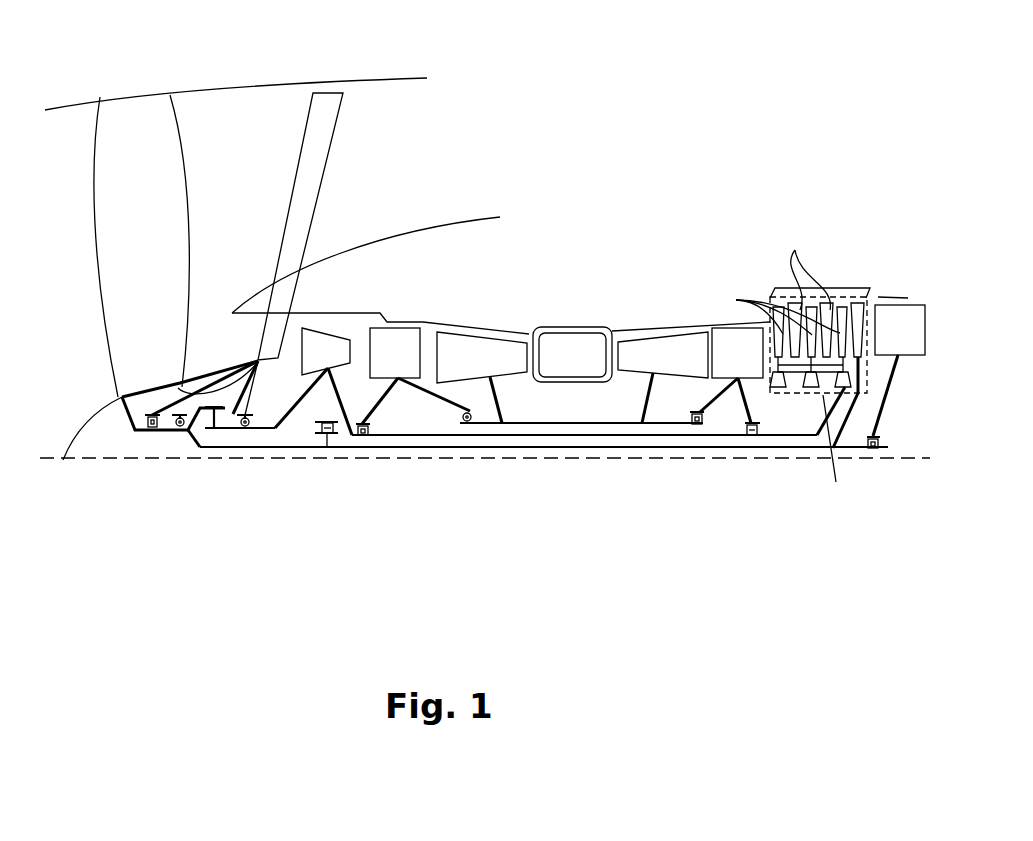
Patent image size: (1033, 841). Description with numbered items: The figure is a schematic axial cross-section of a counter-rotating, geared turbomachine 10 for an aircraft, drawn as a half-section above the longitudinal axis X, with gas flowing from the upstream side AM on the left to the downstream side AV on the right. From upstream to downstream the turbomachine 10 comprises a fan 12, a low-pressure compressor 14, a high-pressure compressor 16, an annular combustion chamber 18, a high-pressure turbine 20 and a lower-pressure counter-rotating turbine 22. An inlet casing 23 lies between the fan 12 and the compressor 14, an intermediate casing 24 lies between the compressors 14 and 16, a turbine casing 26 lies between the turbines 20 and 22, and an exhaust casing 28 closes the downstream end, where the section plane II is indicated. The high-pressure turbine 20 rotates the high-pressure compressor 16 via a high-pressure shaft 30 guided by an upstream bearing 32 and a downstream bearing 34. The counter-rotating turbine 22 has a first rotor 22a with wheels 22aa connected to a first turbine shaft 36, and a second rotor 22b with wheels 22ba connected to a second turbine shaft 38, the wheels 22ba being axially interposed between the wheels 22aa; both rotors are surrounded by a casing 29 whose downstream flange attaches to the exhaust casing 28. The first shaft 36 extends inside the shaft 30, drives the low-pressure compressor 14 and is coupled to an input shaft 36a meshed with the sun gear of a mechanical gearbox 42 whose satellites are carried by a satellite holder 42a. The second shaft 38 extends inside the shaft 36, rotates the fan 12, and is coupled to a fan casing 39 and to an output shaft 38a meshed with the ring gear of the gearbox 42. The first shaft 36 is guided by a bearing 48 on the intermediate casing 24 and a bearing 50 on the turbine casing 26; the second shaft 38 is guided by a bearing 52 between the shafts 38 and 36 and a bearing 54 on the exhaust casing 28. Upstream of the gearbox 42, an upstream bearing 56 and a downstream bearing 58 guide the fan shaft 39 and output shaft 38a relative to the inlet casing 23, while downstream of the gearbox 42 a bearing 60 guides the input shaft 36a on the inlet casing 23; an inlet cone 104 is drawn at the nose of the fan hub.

The turbomachine 10 is at (243, 57).
The fan 12 is at (78, 240).
The inlet casing 23 is at (323, 182).
The low-pressure compressor 14 is at (318, 326).
The intermediate casing 24 is at (404, 327).
The high-pressure compressor 16 is at (470, 328).
The annular combustion chamber 18 is at (572, 383).
The high-pressure turbine 20 is at (660, 328).
The turbine casing 26 is at (758, 388).
The counter-rotating turbine 22 is at (809, 398).
The first rotor 22a is at (768, 299).
The wheels 22aa is at (760, 310).
The second rotor 22b is at (881, 290).
The wheels 22ba is at (799, 268).
The casing 29 is at (856, 306).
The exhaust casing 28 is at (914, 358).
The high-pressure shaft 30 is at (533, 426).
The upstream bearing 32 is at (463, 416).
The downstream bearing 34 is at (697, 428).
The first turbine shaft 36 is at (708, 438).
The input shaft 36a is at (294, 416).
The second turbine shaft 38 is at (637, 449).
The output shaft 38a is at (178, 388).
The fan casing 39 is at (128, 423).
The mechanical gearbox 42 is at (194, 443).
The satellite holder 42a is at (203, 372).
The bearing 48 is at (361, 438).
The bearing 50 is at (748, 434).
The bearing 52 is at (315, 428).
The bearing 54 is at (873, 451).
The upstream bearing 56 is at (153, 429).
The downstream bearing 58 is at (182, 430).
The bearing 60 is at (250, 431).
The inlet cone 104 is at (78, 432).
The longitudinal axis X is at (910, 462).
The section line II is at (831, 453).
The upstream direction AM is at (54, 312).
The downstream direction AV is at (910, 285).